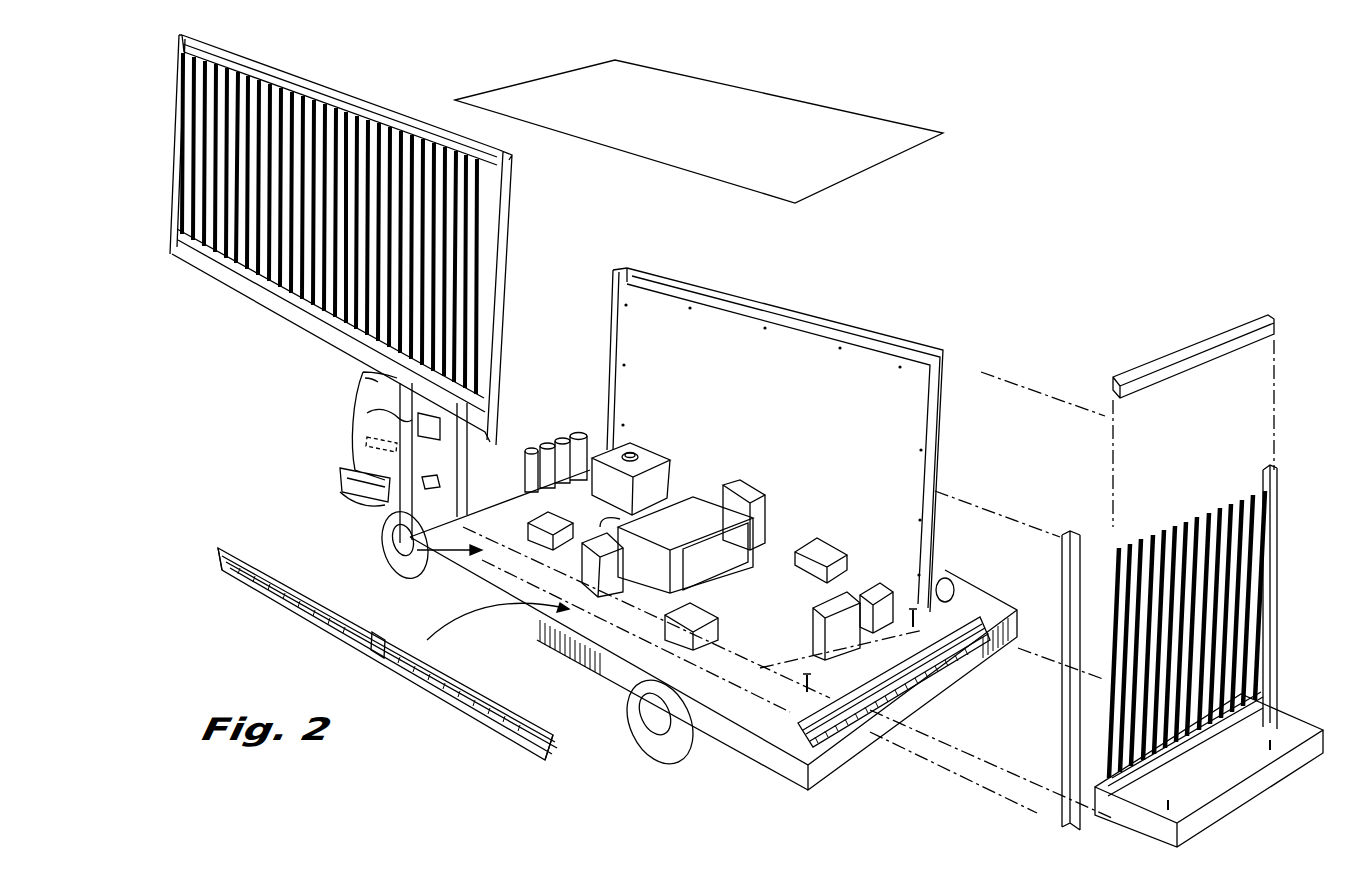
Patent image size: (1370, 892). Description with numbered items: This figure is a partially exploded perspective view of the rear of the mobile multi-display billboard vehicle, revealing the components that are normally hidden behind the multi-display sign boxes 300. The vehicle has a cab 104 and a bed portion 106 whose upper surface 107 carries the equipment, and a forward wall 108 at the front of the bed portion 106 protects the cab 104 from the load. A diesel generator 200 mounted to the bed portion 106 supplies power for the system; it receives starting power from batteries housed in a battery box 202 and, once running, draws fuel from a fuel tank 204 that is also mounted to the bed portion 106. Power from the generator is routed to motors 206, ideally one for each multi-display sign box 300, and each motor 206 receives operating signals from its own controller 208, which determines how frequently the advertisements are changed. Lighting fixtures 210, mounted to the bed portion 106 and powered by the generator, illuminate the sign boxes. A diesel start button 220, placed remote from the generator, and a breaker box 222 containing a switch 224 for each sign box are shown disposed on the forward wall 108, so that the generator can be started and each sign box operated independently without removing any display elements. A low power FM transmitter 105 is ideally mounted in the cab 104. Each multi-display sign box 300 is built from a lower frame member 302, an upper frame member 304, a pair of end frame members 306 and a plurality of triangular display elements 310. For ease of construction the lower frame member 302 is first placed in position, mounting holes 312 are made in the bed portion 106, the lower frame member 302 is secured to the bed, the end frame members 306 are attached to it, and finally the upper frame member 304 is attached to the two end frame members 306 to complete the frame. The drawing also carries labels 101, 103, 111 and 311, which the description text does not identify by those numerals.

The rear panel 101 is at (752, 401).
The base 103 is at (1212, 815).
The cab 104 is at (395, 427).
The low power FM transmitter 105 is at (345, 482).
The bed portion 106 is at (1062, 730).
The upper surface 107 is at (733, 707).
The forward wall 108 is at (410, 540).
The roof panel 111 is at (703, 129).
The diesel generator 200 is at (712, 526).
The battery box 202 is at (533, 537).
The fuel tank 204 is at (657, 486).
The motor 206 is at (873, 595).
The controller 208 is at (600, 570).
The lighting fixtures 210 is at (397, 668).
The diesel start button 220 is at (437, 484).
The breaker box 222 is at (440, 426).
The switch 224 is at (368, 382).
The multi-display sign box 300 is at (210, 318).
The lower frame member 302 is at (283, 305).
The upper frame member 304 is at (376, 106).
The end frame members 306 is at (172, 150).
The triangular display elements 310 is at (328, 138).
The pin 311 is at (1271, 745).
The mounting holes 312 is at (803, 684).